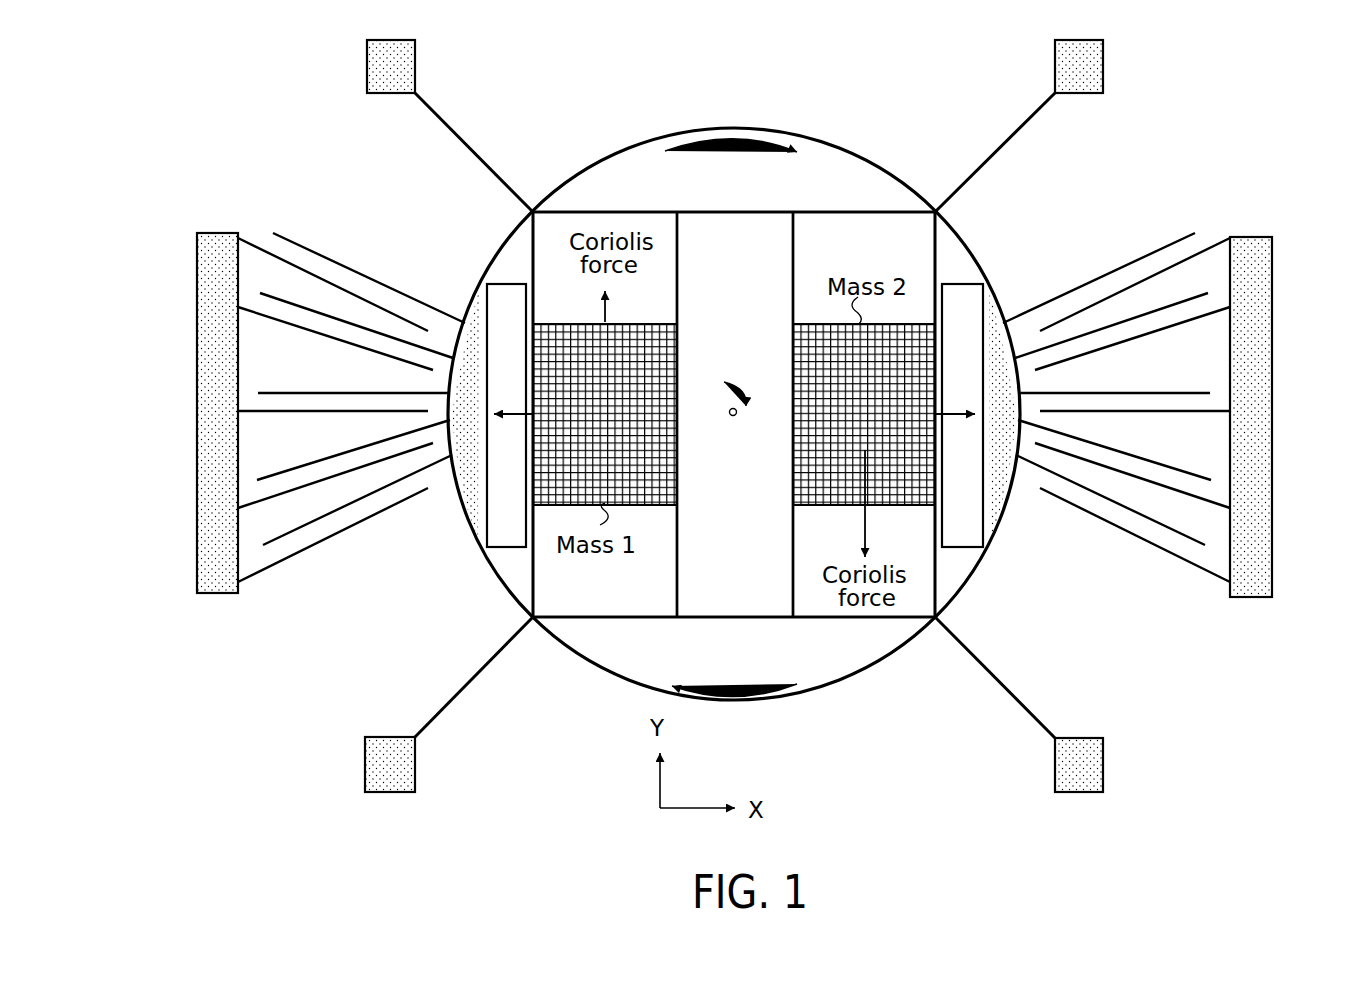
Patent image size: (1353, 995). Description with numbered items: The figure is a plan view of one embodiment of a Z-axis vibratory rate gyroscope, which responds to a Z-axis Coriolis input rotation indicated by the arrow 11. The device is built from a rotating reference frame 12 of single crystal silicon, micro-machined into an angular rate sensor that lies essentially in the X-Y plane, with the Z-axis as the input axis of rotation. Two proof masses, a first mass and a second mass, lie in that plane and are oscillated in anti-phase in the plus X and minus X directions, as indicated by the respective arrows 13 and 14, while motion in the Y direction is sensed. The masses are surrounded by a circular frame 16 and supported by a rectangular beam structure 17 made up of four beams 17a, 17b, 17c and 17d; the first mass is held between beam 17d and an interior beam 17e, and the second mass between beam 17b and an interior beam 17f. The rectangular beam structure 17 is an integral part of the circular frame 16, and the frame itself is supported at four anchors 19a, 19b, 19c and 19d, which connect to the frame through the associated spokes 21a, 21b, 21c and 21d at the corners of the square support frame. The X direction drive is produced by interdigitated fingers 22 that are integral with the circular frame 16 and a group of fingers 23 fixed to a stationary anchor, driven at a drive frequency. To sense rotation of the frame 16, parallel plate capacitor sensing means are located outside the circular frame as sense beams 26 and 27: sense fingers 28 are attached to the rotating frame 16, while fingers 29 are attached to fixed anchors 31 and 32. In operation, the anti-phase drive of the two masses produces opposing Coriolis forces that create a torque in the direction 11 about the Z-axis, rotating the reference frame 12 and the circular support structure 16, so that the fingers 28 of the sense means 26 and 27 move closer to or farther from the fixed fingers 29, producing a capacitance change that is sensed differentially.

The Z-axis Coriolis input rotation arrow 11 is at (748, 143).
The rotating reference frame 12 is at (424, 206).
The drive direction arrow for Mass 1 13 is at (521, 416).
The drive direction arrow for Mass 2 14 is at (948, 418).
The circular frame 16 is at (826, 700).
The rectangular beam structure 17 is at (734, 414).
The beam 17a is at (790, 212).
The beam 17b is at (933, 262).
The beam 17c is at (733, 618).
The beam 17d is at (535, 598).
The interior beam 17e is at (677, 590).
The interior beam 17f is at (793, 523).
The anchor 19a is at (367, 62).
The anchor 19b is at (1103, 56).
The anchor 19c is at (1070, 792).
The anchor 19d is at (376, 792).
The spoke 21a is at (462, 138).
The spoke 21b is at (1010, 138).
The spoke 21c is at (986, 672).
The spoke 21d is at (480, 668).
The interdigitated fingers 22 is at (470, 332).
The group of fingers 23 is at (735, 415).
The sense beam 26 is at (343, 552).
The sense beam 27 is at (1079, 266).
The sense fingers 28 is at (373, 278).
The fingers 29 is at (247, 237).
The fixed anchor 31 is at (197, 408).
The fixed anchor 32 is at (1272, 420).